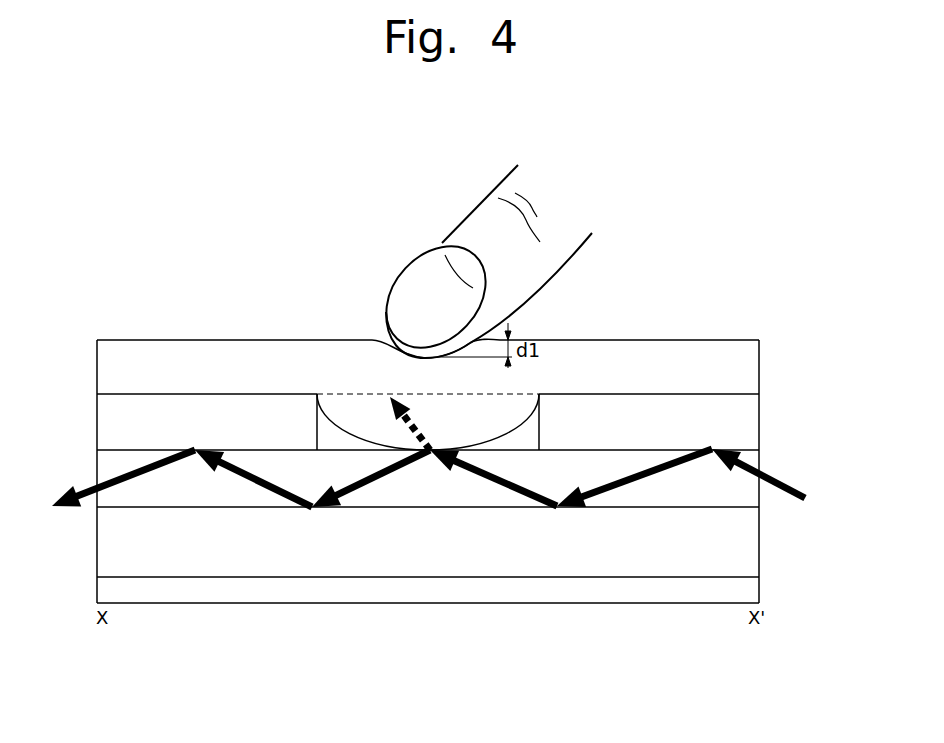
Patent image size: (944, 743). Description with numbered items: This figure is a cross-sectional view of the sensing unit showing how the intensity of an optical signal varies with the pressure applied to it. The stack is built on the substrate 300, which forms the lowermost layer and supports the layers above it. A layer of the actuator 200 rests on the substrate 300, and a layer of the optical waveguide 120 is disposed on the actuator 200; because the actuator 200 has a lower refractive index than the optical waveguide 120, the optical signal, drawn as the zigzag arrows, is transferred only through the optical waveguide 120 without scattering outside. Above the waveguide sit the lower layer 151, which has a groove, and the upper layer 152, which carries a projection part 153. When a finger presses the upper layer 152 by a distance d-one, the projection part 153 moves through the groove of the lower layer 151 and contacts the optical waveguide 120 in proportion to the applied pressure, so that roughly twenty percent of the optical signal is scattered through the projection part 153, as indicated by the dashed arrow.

The upper layer 152 is at (755, 367).
The lower layer 151 is at (755, 428).
The projection part 153 is at (342, 408).
The optical waveguide 120 is at (755, 462).
The actuator 200 is at (755, 543).
The substrate 300 is at (755, 592).